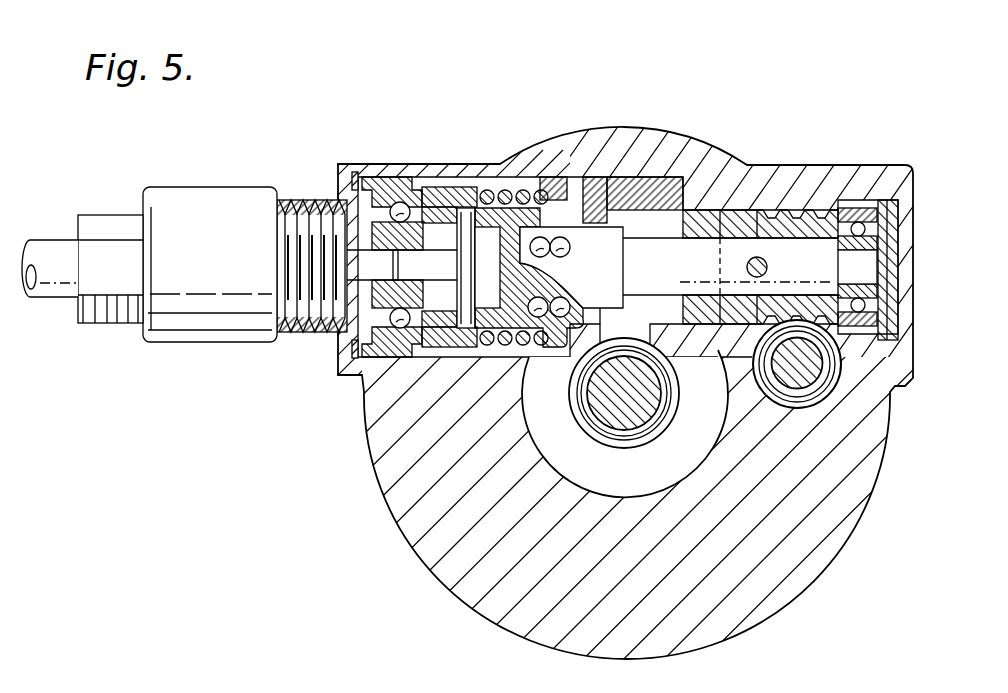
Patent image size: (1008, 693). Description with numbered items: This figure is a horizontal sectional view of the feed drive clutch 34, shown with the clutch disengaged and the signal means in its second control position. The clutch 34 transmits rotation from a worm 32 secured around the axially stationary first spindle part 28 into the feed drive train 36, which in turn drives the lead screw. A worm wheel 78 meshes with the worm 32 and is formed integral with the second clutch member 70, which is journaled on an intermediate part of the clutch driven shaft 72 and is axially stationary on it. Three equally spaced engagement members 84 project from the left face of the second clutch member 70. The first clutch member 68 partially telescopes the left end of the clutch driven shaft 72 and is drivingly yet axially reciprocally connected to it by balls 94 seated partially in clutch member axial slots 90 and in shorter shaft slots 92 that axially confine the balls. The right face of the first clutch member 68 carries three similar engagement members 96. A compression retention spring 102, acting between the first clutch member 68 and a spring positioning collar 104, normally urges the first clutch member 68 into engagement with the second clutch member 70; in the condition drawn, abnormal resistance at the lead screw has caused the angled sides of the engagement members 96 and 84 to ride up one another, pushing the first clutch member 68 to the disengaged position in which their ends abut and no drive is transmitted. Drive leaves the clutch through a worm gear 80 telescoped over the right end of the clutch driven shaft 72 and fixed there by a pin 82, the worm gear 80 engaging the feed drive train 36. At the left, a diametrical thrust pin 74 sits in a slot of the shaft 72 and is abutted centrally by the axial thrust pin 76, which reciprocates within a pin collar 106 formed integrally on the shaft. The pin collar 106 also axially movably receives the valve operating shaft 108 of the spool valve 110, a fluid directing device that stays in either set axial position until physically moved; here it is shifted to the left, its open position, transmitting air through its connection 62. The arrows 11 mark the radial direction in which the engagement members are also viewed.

The section line for FIG. 11 is at (640, 177).
The first spindle part 28 is at (610, 420).
The worm 32 is at (580, 410).
The feed drive clutch 34 is at (463, 177).
The feed drive train 36 is at (828, 397).
The conduit 62 is at (60, 245).
The first clutch member 68 is at (530, 190).
The second clutch member 70 is at (680, 318).
The clutch driven shaft 72 is at (760, 258).
The diametrical thrust pin 74 is at (418, 185).
The axial thrust pin 76 is at (344, 170).
The worm wheel 78 is at (640, 200).
The worm gear 80 is at (822, 228).
The pin 82 is at (808, 218).
The engagement members 84 is at (702, 140).
The clutch member axial slots 90 is at (557, 347).
The shaft slots 92 is at (562, 290).
The balls 94 is at (622, 270).
The engagement members 96 is at (560, 190).
The compression retention spring 102 is at (410, 360).
The spring positioning collar 104 is at (345, 380).
The pin collar 106 is at (333, 333).
The valve operating shaft 108 is at (360, 260).
The spool valve 110 is at (167, 200).